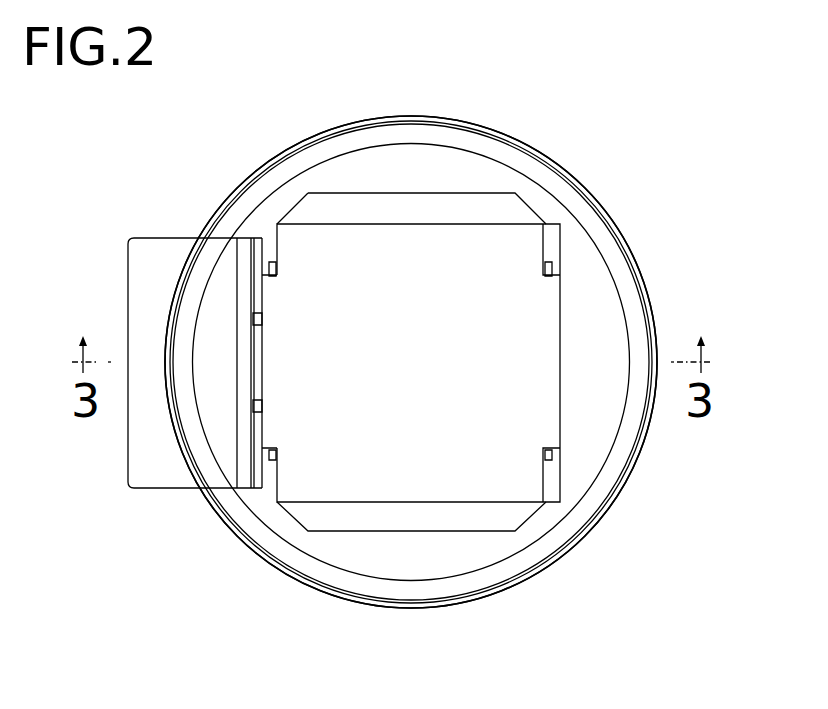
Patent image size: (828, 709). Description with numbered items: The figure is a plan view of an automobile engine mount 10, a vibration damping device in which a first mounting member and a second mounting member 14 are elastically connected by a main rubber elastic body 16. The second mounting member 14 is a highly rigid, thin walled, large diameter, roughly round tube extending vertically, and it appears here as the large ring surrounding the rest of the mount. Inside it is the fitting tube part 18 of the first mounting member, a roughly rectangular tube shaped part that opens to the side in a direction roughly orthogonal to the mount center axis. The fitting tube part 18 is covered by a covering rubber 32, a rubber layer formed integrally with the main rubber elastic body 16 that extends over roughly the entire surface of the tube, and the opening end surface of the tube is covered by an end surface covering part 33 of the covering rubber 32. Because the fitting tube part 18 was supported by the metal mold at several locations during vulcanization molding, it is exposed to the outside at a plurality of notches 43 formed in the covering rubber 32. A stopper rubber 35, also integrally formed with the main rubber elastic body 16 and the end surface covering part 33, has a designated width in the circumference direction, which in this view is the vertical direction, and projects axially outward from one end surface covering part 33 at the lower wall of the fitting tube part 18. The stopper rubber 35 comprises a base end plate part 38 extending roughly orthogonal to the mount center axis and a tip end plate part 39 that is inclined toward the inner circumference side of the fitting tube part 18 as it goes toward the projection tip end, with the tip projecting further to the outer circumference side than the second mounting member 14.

The engine mount 10 is at (658, 194).
The second mounting member 14 is at (419, 110).
The main rubber elastic body 16 is at (603, 313).
The fitting tube part 18 is at (554, 456).
The covering rubber 32 is at (425, 458).
The end surface covering part 33 is at (266, 460).
The stopper rubber 35 is at (126, 452).
The base end plate part 38 is at (246, 285).
The tip end plate part 39 is at (150, 285).
The notches 43 is at (277, 248).